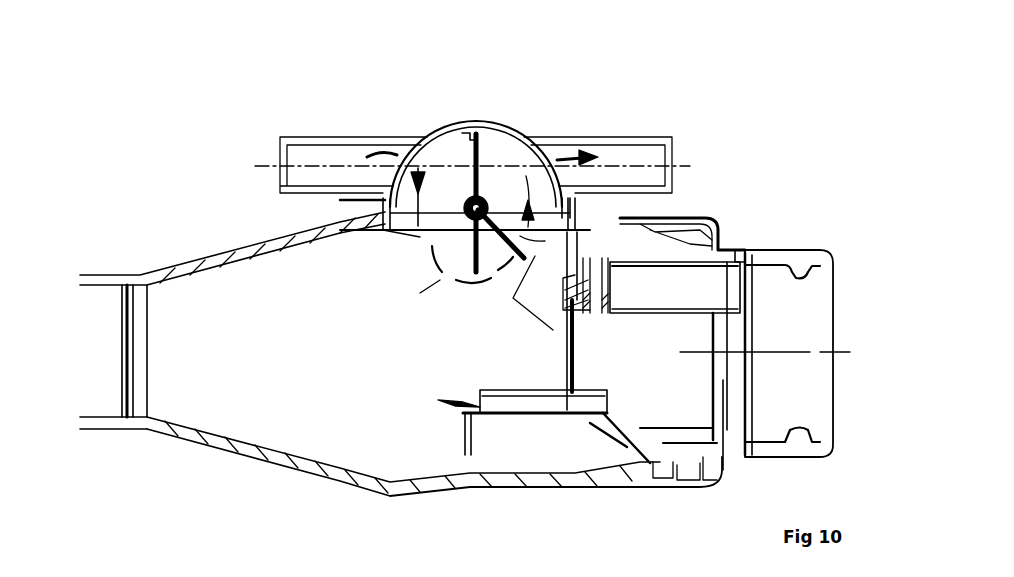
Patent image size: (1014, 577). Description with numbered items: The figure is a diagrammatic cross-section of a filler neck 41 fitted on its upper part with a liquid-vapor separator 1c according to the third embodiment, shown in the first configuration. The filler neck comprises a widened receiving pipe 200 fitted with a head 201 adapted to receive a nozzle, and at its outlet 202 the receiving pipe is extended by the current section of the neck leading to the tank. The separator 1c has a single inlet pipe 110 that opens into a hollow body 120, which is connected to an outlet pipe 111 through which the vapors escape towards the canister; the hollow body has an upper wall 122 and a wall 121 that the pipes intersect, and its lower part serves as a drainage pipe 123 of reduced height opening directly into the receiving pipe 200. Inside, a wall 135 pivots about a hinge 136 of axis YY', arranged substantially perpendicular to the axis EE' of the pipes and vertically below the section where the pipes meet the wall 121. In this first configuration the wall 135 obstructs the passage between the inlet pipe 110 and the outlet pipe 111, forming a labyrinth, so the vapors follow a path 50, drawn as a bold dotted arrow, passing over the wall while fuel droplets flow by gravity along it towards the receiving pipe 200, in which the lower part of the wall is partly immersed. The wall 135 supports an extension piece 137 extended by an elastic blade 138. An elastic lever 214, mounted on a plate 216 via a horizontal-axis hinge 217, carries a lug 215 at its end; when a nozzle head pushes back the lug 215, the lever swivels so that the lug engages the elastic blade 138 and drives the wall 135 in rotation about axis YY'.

The liquid-vapor separator 1c is at (431, 104).
The inlet pipe 110 is at (287, 152).
The outlet pipe 111 is at (660, 158).
The hollow body 120 is at (412, 190).
The wall of the hollow body 121 is at (372, 214).
The upper wall 122 is at (471, 128).
The drainage pipe 123 is at (420, 235).
The wall 135 is at (481, 158).
The hinge 136 is at (484, 200).
The extension piece 137 is at (546, 245).
The elastic blade 138 is at (514, 296).
The filler neck 41 is at (220, 218).
The path 50 is at (432, 290).
The receiving pipe 200 is at (285, 370).
The head 201 is at (817, 310).
The outlet 202 is at (97, 357).
The elastic lever 214 is at (612, 302).
The lug 215 is at (566, 386).
The plate 216 is at (748, 258).
The hinge 217 is at (624, 313).